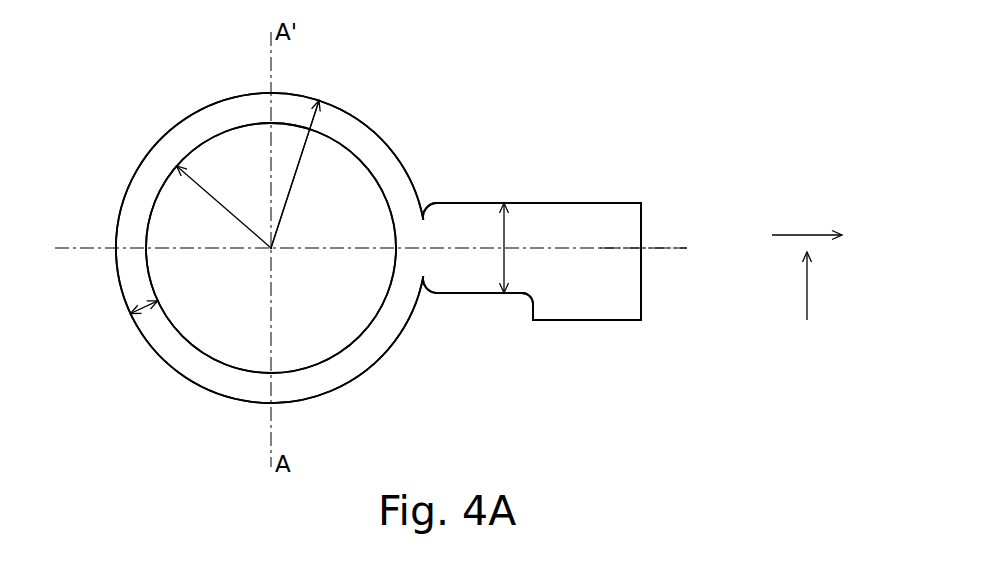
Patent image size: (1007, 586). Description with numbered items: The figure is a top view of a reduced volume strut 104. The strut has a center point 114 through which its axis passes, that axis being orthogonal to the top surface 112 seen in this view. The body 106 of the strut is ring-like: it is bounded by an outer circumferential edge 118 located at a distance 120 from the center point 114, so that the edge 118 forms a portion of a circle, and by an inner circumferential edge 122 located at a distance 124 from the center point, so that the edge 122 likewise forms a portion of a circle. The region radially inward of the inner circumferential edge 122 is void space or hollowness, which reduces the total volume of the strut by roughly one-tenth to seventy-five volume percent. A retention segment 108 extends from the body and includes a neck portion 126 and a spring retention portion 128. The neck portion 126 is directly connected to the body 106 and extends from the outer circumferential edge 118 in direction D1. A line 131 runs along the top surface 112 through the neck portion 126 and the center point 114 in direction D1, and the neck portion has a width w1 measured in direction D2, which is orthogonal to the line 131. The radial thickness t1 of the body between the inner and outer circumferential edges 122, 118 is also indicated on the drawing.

The strut 104 is at (669, 67).
The body 106 is at (259, 420).
The arm portion 108 is at (513, 370).
The top surface 112 is at (178, 358).
The center point 114 is at (271, 248).
The outer circumferential edge 118 is at (295, 94).
The distance 120 is at (307, 158).
The inner circumferential edge 122 is at (160, 195).
The distance 124 is at (215, 197).
The neck portion 126 is at (460, 294).
The spring retention portion 128 is at (607, 320).
The line 131 is at (672, 247).
The ring thickness t1 is at (152, 297).
The width w1 is at (504, 243).
The direction D1 is at (807, 224).
The direction D2 is at (824, 286).